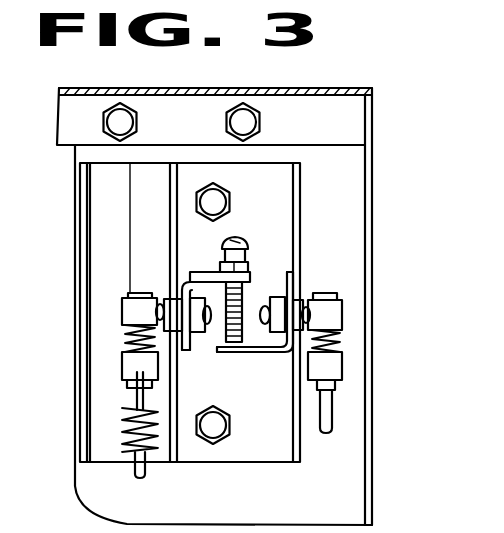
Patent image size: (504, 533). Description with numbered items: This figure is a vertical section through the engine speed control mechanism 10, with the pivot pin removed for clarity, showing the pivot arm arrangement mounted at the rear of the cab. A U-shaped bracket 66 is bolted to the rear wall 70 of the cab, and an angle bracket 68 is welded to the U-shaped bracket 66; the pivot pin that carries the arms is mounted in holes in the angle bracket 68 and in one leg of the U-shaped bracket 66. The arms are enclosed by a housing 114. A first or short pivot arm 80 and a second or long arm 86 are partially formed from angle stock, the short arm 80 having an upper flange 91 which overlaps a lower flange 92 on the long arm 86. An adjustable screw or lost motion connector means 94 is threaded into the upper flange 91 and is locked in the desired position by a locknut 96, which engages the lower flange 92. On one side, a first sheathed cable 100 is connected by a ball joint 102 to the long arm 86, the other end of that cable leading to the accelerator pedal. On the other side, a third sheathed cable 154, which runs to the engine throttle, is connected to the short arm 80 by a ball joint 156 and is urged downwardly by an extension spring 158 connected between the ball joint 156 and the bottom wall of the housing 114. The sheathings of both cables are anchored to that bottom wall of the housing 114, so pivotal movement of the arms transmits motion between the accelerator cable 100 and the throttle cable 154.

The engine speed control mechanism 10 is at (393, 83).
The housing 114 is at (373, 140).
The rear wall 70 is at (357, 183).
The U-shaped bracket 66 is at (283, 177).
The angle bracket 68 is at (152, 170).
The adjustable screw 94 is at (230, 236).
The locknut 96 is at (248, 271).
The upper flange 91 is at (200, 276).
The short pivot arm 80 is at (190, 352).
The lower flange 92 is at (268, 353).
The long arm 86 is at (296, 283).
The ball joint 102 is at (343, 313).
The first sheathed cable 100 is at (333, 408).
The ball joint 156 is at (121, 312).
The extension spring 158 is at (122, 423).
The sheathed cable 154 is at (138, 480).